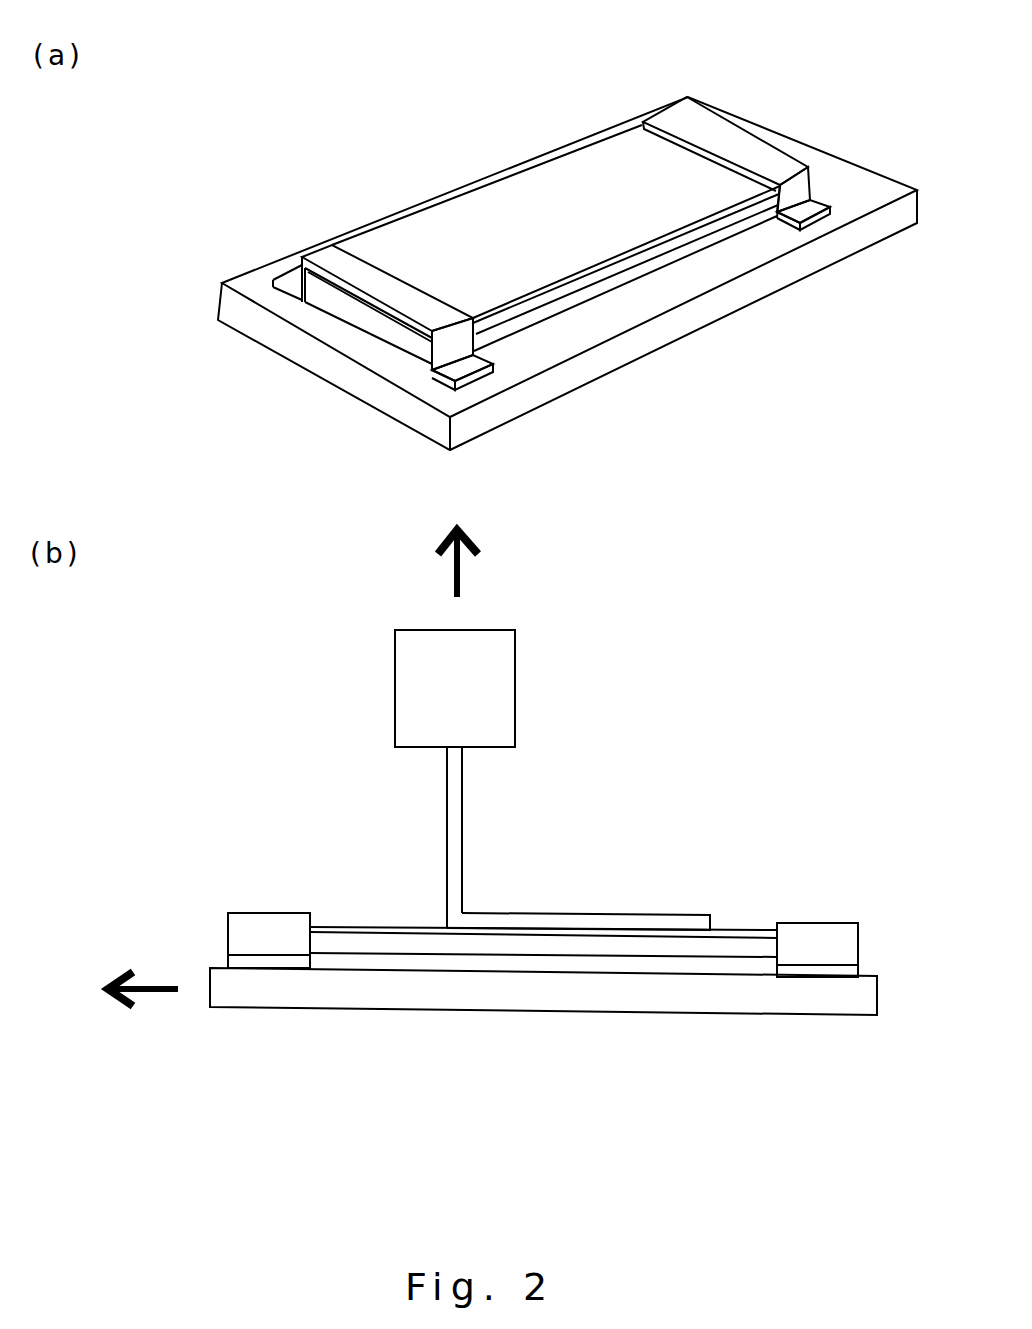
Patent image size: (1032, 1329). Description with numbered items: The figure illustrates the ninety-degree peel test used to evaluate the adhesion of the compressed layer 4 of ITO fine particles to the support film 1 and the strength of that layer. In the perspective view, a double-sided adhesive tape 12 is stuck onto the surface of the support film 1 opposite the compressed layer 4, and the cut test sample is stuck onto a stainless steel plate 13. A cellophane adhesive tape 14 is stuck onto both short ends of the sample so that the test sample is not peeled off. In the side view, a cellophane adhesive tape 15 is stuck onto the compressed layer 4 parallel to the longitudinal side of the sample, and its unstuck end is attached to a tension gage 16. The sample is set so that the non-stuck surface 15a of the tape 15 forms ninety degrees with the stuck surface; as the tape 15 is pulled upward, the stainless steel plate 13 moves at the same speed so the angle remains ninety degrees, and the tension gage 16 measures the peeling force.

The support film 1 is at (785, 200).
The compressed layer 4 is at (630, 170).
The double-sided adhesive tape 12 is at (730, 228).
The stainless steel plate 13 is at (660, 338).
The cellophane adhesive tape 14 is at (327, 257).
The cellophane adhesive tape 15 is at (655, 927).
The non-stuck surface 15a is at (447, 806).
The tension gage 16 is at (502, 703).